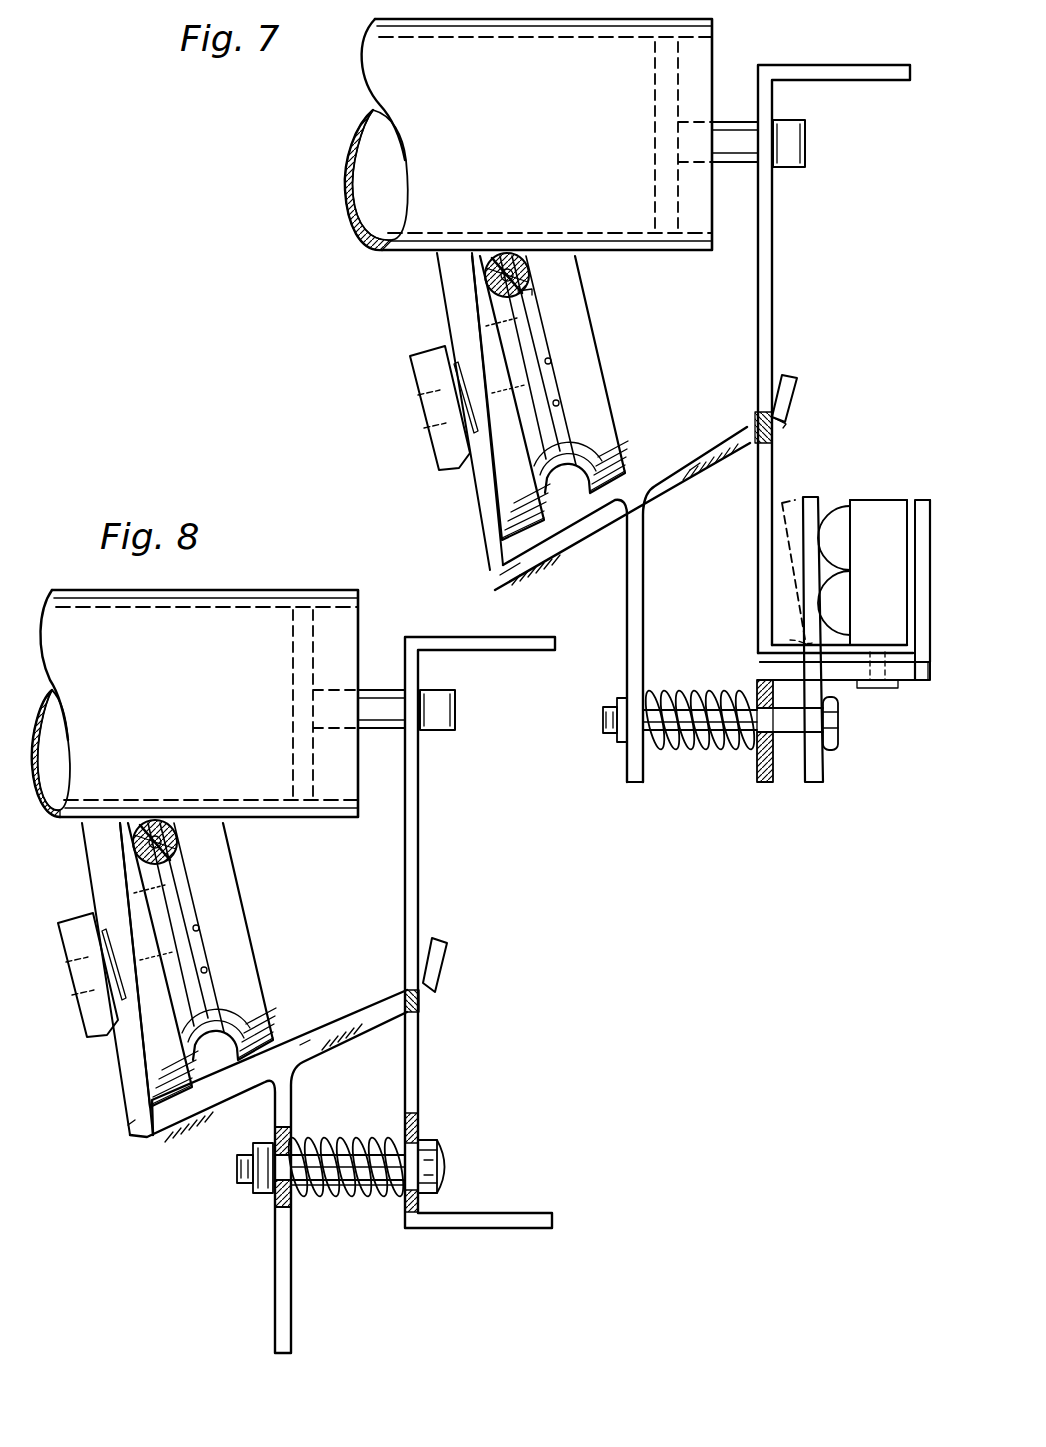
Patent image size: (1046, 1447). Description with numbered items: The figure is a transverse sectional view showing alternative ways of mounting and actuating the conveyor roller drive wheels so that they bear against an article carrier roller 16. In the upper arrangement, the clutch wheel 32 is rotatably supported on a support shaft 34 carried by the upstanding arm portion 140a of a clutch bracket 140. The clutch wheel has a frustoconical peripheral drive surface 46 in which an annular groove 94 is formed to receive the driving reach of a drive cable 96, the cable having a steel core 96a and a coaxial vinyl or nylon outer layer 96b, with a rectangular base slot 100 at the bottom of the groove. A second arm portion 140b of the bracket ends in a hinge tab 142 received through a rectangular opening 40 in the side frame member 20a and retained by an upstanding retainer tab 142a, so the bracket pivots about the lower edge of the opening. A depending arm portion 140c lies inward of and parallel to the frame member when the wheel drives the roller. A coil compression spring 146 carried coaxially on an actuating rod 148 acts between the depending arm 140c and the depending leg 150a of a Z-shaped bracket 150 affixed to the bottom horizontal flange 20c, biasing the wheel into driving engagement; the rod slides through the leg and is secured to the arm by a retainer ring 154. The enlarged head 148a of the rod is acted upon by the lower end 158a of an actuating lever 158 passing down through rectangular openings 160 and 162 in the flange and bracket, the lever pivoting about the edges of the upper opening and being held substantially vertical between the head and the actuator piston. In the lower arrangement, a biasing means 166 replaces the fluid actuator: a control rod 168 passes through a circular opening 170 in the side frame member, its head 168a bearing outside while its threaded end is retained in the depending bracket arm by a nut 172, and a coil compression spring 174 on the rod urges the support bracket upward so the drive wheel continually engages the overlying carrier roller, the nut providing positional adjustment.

In FIG. 7, the carrier roller 16 is at (383, 256).
In FIG. 8, the carrier roller 16 is at (298, 563).
In FIG. 7, the side frame member 20a is at (768, 247).
In FIG. 7, the bottom horizontal flange 20c is at (858, 645).
In FIG. 7, the clutch wheel 32 is at (446, 306).
In FIG. 7, the support shaft 34 is at (427, 418).
In FIG. 8, the support shaft 34 is at (68, 1015).
In FIG. 7, the rectangular opening 40 is at (786, 424).
In FIG. 7, the frustoconical peripheral drive surface 46 is at (628, 472).
In FIG. 8, the frustoconical peripheral drive surface 46 is at (277, 1050).
In FIG. 7, the annular groove 94 is at (561, 388).
In FIG. 8, the annular groove 94 is at (197, 928).
In FIG. 7, the drive cable 96 is at (477, 264).
In FIG. 8, the drive cable 96 is at (180, 858).
In FIG. 7, the metallic core 96a is at (527, 287).
In FIG. 7, the outer layer of vinyl or nylon 96b is at (530, 260).
In FIG. 7, the slot 100 is at (560, 425).
In FIG. 8, the slot 100 is at (193, 970).
In FIG. 7, the clutch bracket 140 is at (490, 576).
In FIG. 7, the upstanding arm portion 140a is at (465, 503).
In FIG. 7, the second arm portion 140b is at (700, 478).
In FIG. 7, the depending arm portion 140c is at (627, 600).
In FIG. 7, the hinge tab 142 is at (755, 428).
In FIG. 7, the retainer tab 142a is at (799, 379).
In FIG. 7, the coil compression spring 146 is at (682, 750).
In FIG. 7, the actuating rod 148 is at (668, 697).
In FIG. 7, the enlarged head 148a is at (839, 735).
In FIG. 7, the Z-shaped bracket 150 is at (924, 686).
In FIG. 7, the depending leg 150a is at (760, 785).
In FIG. 7, the retainer ring 154 is at (606, 742).
In FIG. 7, the actuating lever 158 is at (815, 497).
In FIG. 7, the lower end 158a is at (811, 784).
In FIG. 7, the rectangular opening 160 is at (795, 636).
In FIG. 7, the rectangular opening 162 is at (790, 668).
In FIG. 8, the biasing means 166 is at (351, 1222).
In FIG. 8, the control rod 168 is at (378, 1192).
In FIG. 8, the head 168a is at (447, 1178).
In FIG. 8, the circular opening 170 is at (420, 1160).
In FIG. 8, the nut 172 is at (263, 1197).
In FIG. 8, the coil compression spring 174 is at (370, 1112).